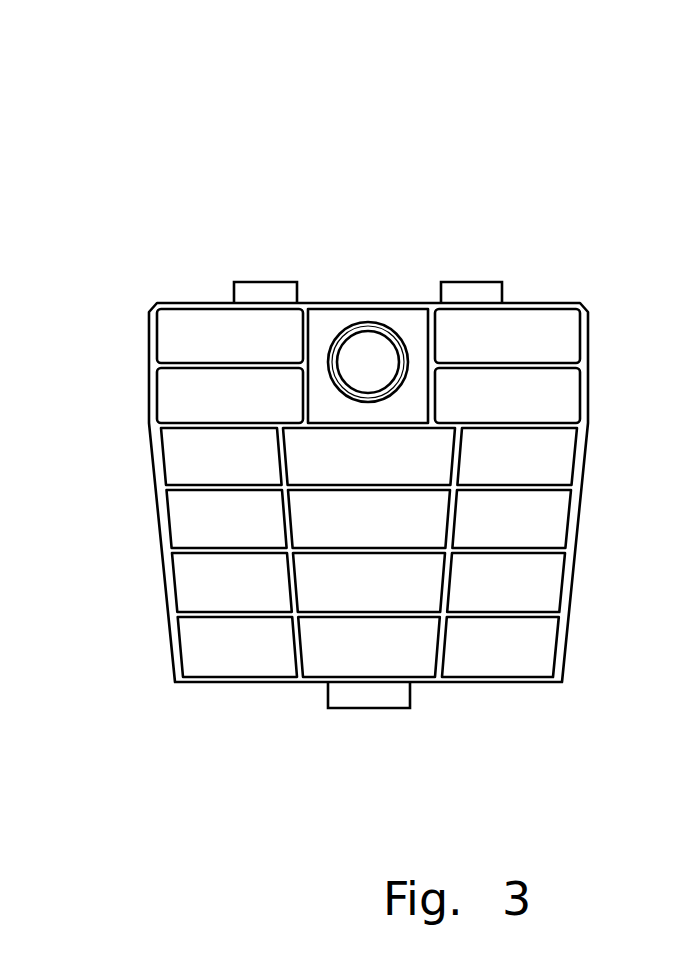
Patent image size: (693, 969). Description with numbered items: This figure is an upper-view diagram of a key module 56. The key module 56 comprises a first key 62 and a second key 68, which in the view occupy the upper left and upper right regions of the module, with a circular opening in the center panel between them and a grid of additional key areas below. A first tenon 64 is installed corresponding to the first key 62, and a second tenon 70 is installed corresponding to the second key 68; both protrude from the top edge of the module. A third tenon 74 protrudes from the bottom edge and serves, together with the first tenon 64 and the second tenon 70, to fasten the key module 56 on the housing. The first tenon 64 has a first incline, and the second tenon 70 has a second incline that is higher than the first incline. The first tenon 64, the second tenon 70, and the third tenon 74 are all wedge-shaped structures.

The key module 56 is at (532, 105).
The first key 62 is at (172, 339).
The first tenon 64 is at (268, 292).
The second key 68 is at (563, 339).
The second tenon 70 is at (468, 292).
The third tenon 74 is at (368, 697).